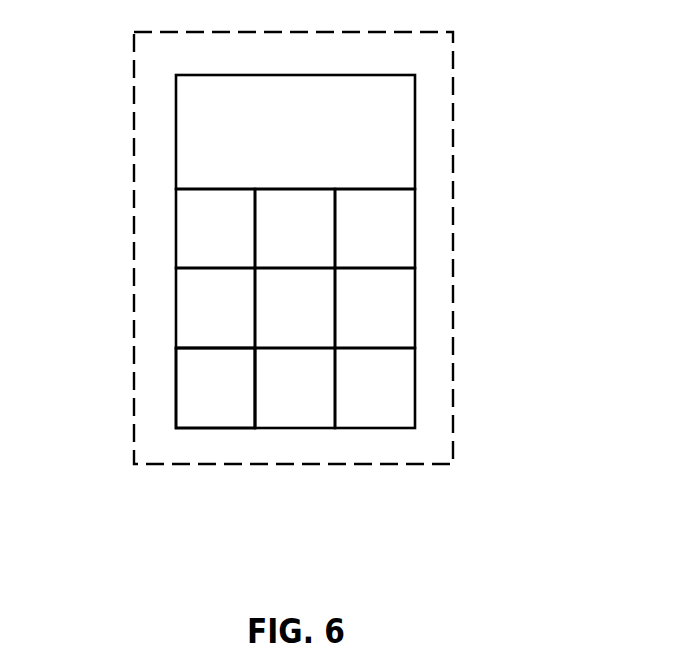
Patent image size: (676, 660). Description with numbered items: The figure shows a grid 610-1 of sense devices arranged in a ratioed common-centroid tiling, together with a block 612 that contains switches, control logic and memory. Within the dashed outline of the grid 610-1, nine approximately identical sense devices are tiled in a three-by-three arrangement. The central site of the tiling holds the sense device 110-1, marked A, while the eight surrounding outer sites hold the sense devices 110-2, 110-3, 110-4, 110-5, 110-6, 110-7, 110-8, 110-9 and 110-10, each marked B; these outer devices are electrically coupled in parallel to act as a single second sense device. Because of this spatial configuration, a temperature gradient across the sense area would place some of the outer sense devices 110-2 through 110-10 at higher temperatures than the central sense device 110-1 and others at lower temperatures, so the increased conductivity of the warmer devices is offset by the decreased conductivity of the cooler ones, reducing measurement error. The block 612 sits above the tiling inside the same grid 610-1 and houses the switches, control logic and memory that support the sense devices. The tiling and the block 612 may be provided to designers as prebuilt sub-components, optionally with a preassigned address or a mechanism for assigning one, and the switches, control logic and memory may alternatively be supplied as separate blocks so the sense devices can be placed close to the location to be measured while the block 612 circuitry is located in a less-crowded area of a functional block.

The grid 610-1 is at (134, 97).
The block 612 is at (295, 132).
The sense device 110-1 is at (320, 310).
The sense device 110-2 is at (415, 225).
The sense device 110-3 is at (415, 302).
The sense device 110-4 is at (384, 428).
The sense device 110-5 is at (293, 428).
The sense device 110-6 is at (216, 428).
The sense device 110-7 is at (176, 388).
The sense device 110-8 is at (176, 310).
The sense device 110-9 is at (176, 238).
The sense device 110-10 is at (312, 218).